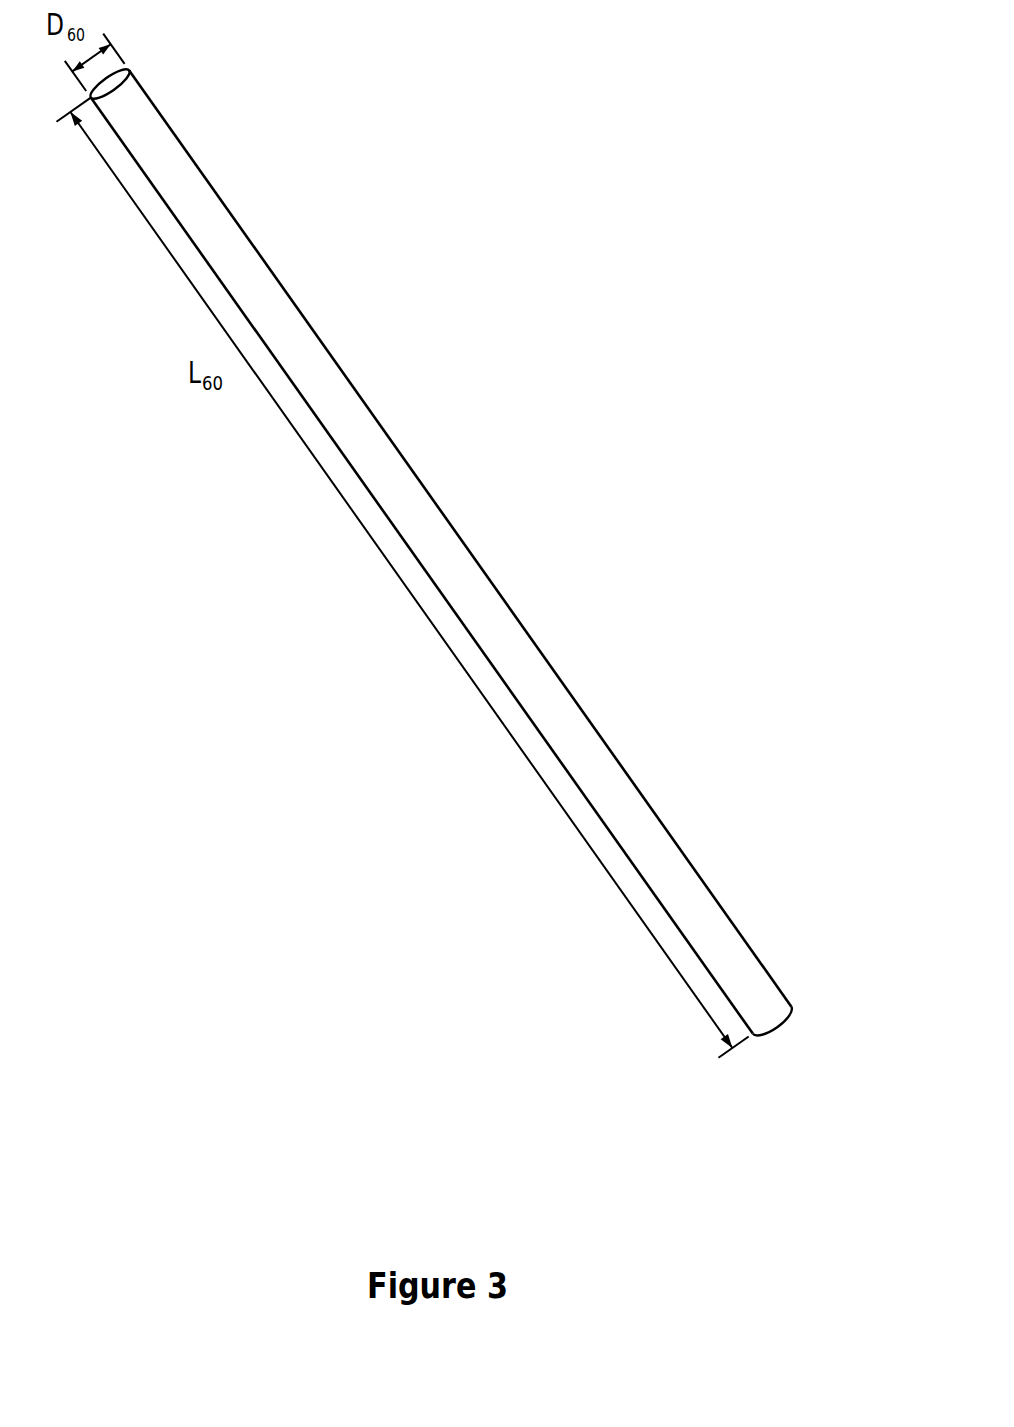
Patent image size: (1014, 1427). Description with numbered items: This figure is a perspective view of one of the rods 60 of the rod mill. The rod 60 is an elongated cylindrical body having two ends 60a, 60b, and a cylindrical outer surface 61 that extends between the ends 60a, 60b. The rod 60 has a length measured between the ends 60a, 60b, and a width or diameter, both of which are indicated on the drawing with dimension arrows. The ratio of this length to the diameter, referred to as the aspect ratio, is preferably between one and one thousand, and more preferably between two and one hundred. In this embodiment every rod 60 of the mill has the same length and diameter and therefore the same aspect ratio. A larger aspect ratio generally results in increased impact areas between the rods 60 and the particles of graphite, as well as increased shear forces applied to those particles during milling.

The rod 60 is at (487, 533).
The end 60a is at (132, 80).
The end 60b is at (777, 1027).
The cylindrical outer surface 61 is at (587, 743).